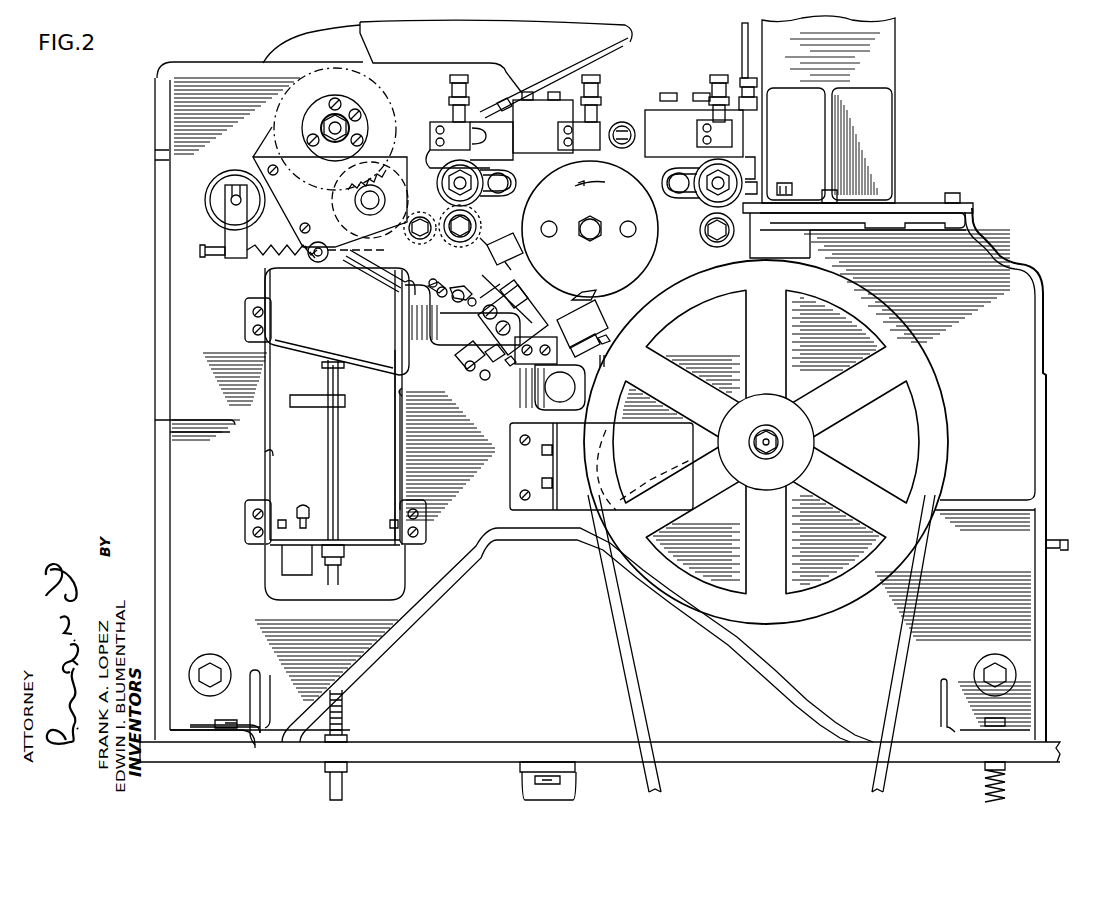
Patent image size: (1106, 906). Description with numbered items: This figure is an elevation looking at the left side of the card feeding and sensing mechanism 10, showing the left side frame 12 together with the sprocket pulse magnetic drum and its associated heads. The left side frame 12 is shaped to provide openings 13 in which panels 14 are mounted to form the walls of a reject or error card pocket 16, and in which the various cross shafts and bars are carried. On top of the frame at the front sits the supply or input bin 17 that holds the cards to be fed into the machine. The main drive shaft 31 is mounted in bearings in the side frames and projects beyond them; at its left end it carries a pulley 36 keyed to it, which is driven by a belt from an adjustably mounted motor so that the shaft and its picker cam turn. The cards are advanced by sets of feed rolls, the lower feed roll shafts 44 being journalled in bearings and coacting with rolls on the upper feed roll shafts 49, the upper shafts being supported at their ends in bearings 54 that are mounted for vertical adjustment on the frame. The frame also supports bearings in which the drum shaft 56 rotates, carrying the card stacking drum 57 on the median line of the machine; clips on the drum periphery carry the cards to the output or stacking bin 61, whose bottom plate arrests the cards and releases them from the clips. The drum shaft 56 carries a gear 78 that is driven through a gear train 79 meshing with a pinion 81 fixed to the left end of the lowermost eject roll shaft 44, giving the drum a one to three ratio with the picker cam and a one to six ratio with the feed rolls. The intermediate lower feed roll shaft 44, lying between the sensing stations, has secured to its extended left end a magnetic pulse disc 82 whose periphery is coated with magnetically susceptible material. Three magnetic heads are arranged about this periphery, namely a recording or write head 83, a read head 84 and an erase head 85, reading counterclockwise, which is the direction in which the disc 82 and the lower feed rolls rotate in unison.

The card feeding and sensing mechanism 10 is at (1050, 280).
The left side frame 12 is at (1016, 425).
The openings 13 is at (401, 458).
The panels 14 is at (402, 392).
The reject or error card pocket 16 is at (314, 480).
The supply or input bin 17 is at (877, 113).
The main drive shaft 31 is at (778, 442).
The pulley 36 is at (931, 392).
The lower feed roll shafts 44 is at (586, 226).
The upper feed roll shafts 49 is at (450, 176).
The bearings 54 is at (499, 174).
The drum shaft 56 is at (328, 126).
The card stacking drum 57 is at (286, 52).
The output or stacking bin 61 is at (603, 32).
The gear 78 is at (370, 96).
The gear train 79 is at (368, 282).
The pinion 81 is at (480, 267).
The magnetic pulse disc 82 is at (641, 252).
The recording or write head 83 is at (515, 256).
The read head 84 is at (511, 292).
The erase head 85 is at (587, 328).